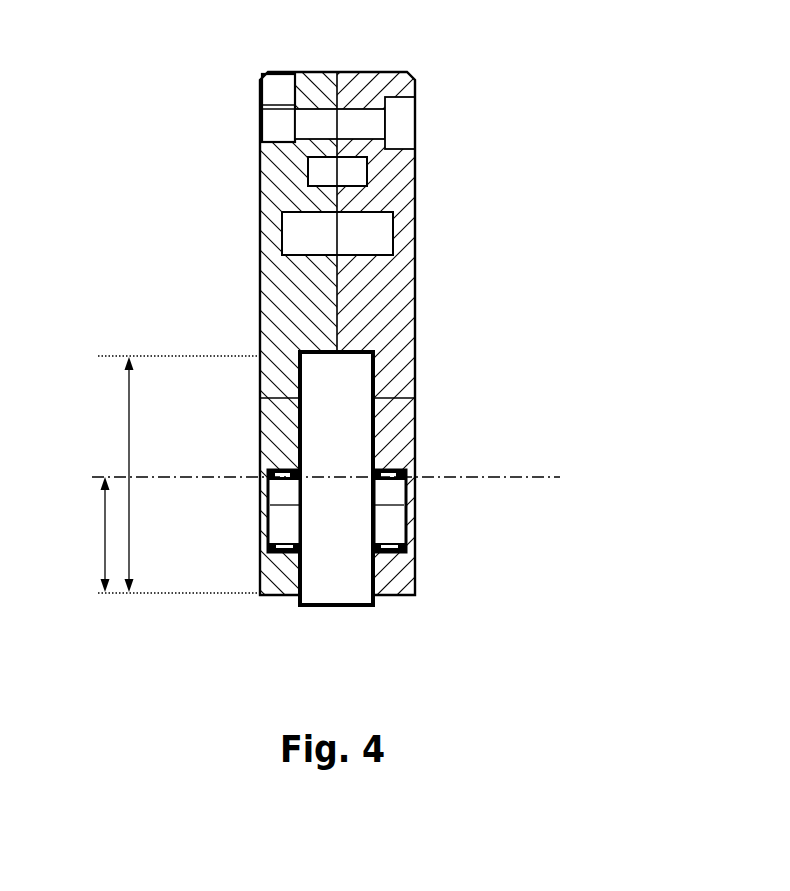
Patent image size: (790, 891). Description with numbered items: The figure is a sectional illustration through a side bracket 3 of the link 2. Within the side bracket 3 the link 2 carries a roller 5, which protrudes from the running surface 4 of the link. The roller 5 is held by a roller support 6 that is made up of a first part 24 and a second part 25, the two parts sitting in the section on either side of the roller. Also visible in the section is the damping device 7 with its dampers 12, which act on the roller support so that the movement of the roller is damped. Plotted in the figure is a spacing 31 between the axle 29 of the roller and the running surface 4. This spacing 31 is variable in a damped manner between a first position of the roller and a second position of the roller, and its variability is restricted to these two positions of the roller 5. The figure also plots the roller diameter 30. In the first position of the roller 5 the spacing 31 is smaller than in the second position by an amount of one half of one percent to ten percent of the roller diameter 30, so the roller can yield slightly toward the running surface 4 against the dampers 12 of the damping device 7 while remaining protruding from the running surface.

The link 2 is at (395, 351).
The side bracket 3 is at (415, 265).
The running surface 4 is at (273, 612).
The roller 5 is at (350, 382).
The roller support 6 is at (334, 525).
The damping device 7 is at (334, 502).
The dampers 12 is at (278, 490).
The first part 24 is at (396, 530).
The second part 25 is at (278, 527).
The axle 29 is at (440, 480).
The roller diameter 30 is at (128, 410).
The spacing 31 is at (105, 528).